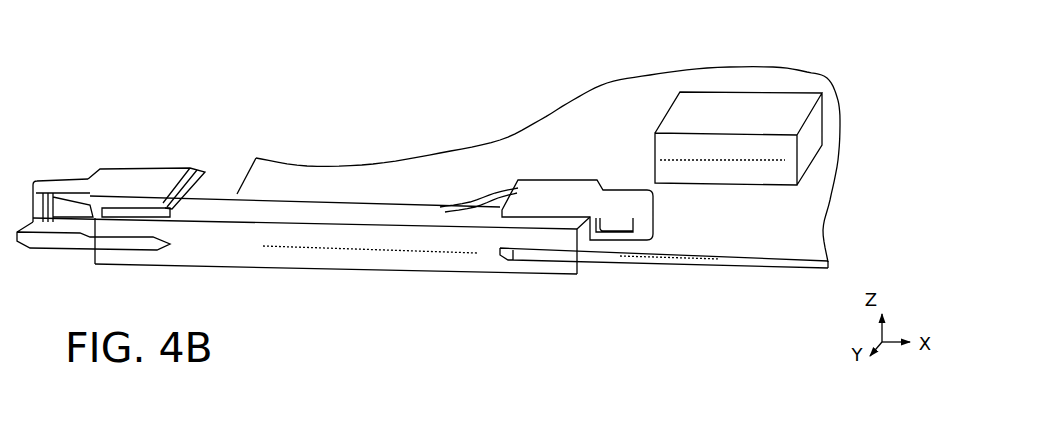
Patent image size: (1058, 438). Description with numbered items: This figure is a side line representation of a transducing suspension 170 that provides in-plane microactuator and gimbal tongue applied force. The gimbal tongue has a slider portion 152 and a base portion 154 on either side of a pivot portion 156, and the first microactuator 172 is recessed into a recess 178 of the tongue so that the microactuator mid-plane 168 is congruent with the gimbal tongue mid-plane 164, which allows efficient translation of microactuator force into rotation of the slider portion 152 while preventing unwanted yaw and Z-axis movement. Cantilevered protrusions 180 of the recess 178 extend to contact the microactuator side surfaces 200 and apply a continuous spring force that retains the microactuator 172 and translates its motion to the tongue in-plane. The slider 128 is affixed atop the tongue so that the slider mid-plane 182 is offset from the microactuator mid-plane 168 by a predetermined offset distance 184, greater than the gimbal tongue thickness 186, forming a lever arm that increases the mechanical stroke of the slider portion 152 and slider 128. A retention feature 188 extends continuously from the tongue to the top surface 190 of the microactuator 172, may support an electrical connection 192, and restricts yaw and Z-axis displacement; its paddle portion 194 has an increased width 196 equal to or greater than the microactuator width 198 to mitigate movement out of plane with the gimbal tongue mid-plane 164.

The slider 128 is at (713, 124).
The slider portion 152 is at (777, 253).
The base portion 154 is at (252, 194).
The pivot portion 156 is at (502, 151).
The gimbal tongue mid-plane 164 is at (628, 260).
The microactuator mid-plane 168 is at (335, 249).
The transducing suspension 170 is at (887, 28).
The first microactuator 172 is at (227, 258).
The recess 178 is at (471, 199).
The cantilevered protrusion 180 is at (120, 253).
The slider mid-plane 182 is at (778, 163).
The offset distance 184 is at (678, 162).
The gimbal tongue thickness 186 is at (737, 232).
The retention feature 188 is at (138, 163).
The top surface 190 is at (372, 206).
The electrical connection 192 is at (180, 208).
The paddle portion 194 is at (576, 179).
The increased width 196 is at (517, 204).
The microactuator width 198 is at (420, 222).
The microactuator side surface 200 is at (421, 272).